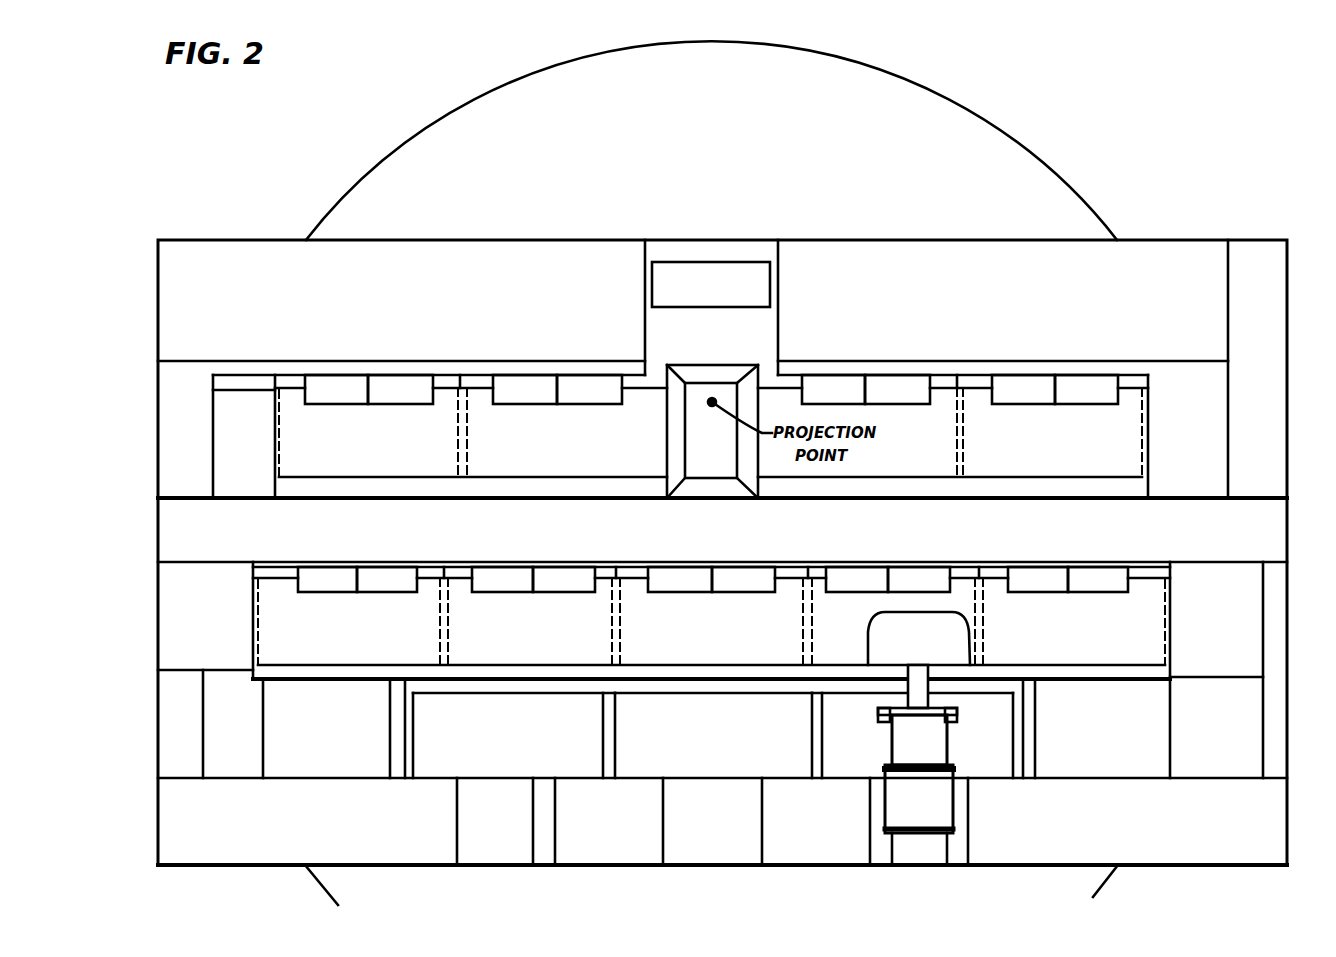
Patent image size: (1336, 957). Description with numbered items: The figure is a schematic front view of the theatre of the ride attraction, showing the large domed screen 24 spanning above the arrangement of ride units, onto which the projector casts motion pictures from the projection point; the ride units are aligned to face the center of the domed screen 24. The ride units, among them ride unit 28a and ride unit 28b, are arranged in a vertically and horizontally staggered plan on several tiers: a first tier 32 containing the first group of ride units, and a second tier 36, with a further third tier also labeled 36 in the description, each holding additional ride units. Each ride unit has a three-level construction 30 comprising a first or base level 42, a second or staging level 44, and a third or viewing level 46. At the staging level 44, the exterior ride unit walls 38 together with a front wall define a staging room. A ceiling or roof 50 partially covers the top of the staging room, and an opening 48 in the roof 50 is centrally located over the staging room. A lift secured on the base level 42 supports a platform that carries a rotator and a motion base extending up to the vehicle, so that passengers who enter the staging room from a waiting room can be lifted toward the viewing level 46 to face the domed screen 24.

The domed screen 24 is at (1090, 193).
The exterior ride unit walls 38 is at (1112, 358).
The second tier 36 is at (1210, 558).
The first tier 32 is at (1195, 776).
The roof 50 is at (836, 685).
The ride unit 28a is at (993, 742).
The ride unit 28b is at (712, 733).
The 3-level construction 30 is at (859, 742).
The viewing level 46 is at (962, 686).
The opening 48 is at (876, 690).
The staging level 44 is at (980, 782).
The base level 42 is at (918, 867).